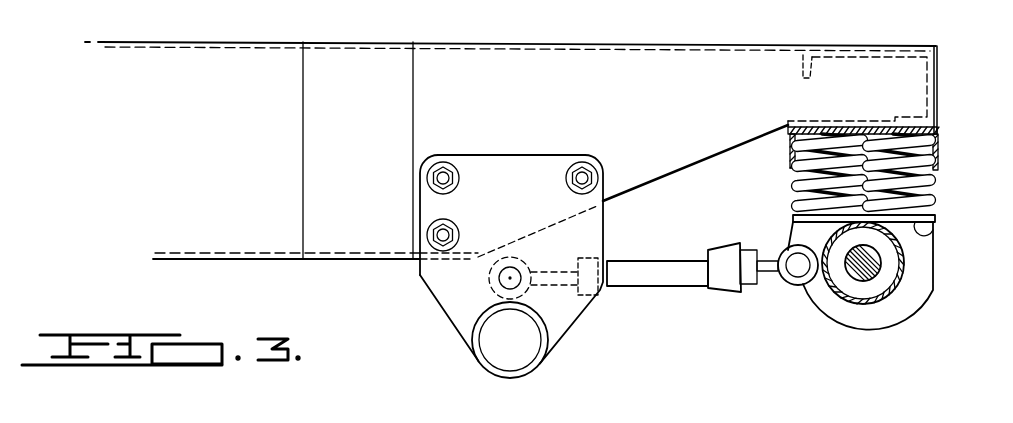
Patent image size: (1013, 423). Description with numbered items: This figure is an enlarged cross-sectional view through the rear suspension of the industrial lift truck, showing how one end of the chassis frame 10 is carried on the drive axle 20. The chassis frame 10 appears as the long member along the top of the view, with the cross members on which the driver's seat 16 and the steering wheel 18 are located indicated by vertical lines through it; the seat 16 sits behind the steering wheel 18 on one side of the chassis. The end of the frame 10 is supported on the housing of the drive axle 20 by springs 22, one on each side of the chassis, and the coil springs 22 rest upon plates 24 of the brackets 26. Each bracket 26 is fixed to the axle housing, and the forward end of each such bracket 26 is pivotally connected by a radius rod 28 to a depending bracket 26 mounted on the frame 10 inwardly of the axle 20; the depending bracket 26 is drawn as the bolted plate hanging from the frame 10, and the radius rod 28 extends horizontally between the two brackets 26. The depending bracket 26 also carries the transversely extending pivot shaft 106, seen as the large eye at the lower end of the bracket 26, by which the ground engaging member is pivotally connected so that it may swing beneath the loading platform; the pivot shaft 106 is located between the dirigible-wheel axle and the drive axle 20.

The chassis frame 10 is at (548, 43).
The driver's seat 16 is at (230, 1).
The steering wheel 18 is at (330, 1).
The drive axle 20 is at (873, 268).
The springs 22 is at (797, 190).
The plates 24 is at (930, 231).
The brackets 26 is at (590, 226).
The radius rod 28 is at (670, 286).
The pivot shaft 106 is at (528, 352).